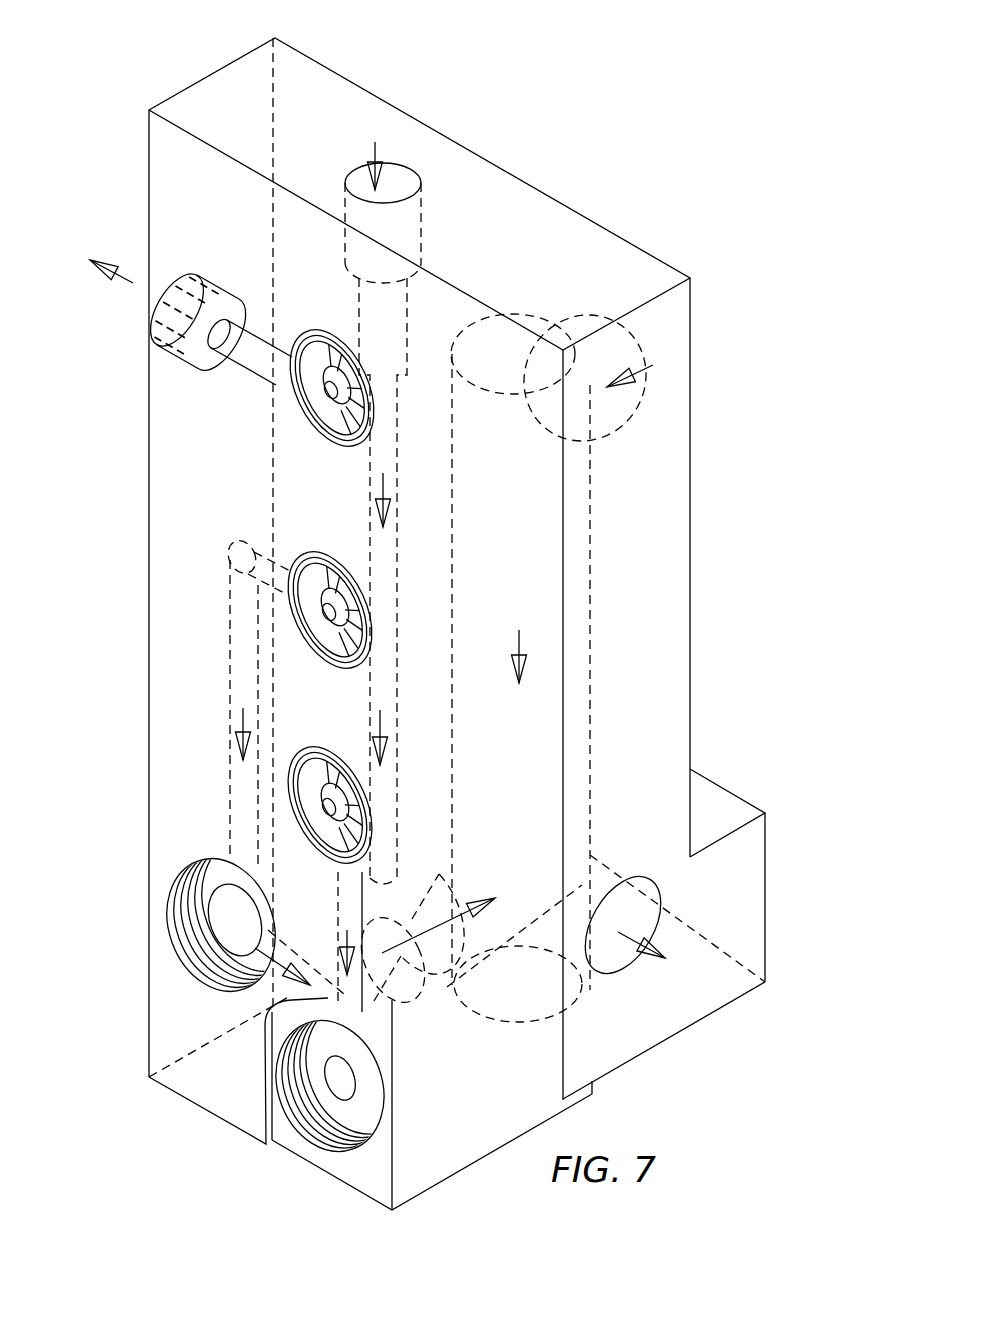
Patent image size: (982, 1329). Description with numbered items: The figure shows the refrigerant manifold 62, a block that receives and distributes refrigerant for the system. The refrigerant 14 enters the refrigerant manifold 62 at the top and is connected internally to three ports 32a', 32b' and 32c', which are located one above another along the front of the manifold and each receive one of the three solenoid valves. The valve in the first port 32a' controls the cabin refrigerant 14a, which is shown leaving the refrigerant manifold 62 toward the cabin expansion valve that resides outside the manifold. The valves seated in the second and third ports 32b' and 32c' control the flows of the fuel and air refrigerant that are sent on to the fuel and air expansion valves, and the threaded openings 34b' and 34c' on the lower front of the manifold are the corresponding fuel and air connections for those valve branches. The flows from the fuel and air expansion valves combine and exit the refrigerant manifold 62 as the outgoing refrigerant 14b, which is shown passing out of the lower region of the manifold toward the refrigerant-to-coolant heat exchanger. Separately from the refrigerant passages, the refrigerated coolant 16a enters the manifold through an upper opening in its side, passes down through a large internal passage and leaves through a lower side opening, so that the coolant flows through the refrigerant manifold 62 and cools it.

The refrigerant manifold 62 is at (537, 105).
The refrigerant 14 is at (378, 152).
The cabin refrigerant 14a is at (128, 285).
The outlet channel 14b is at (428, 898).
The refrigerated coolant 16a is at (643, 373).
The port 32a' is at (265, 362).
The port 32b' is at (297, 589).
The port 32c' is at (330, 781).
The second outlet port 34b' is at (238, 905).
The third outlet port 34c' is at (366, 1077).